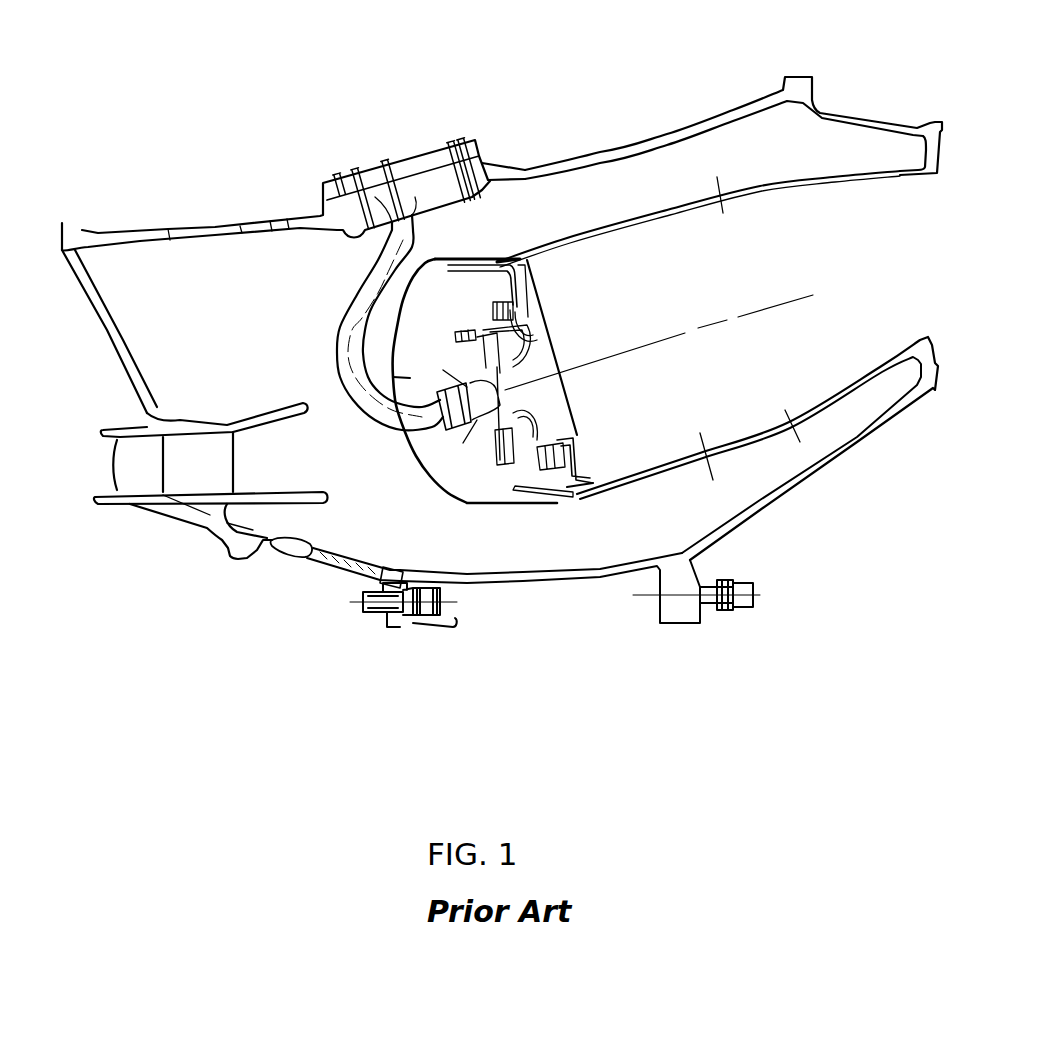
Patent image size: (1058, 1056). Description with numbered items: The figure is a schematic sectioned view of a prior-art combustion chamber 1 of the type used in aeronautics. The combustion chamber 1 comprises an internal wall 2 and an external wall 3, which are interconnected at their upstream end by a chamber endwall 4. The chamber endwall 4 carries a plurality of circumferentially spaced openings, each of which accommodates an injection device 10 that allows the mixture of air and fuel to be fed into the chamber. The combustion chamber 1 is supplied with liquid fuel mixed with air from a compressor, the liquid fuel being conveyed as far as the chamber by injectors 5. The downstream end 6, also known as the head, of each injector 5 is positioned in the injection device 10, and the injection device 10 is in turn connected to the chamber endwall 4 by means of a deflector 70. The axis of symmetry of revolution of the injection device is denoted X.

The combustion chamber 1 is at (818, 150).
The internal wall 2 is at (668, 479).
The external wall 3 is at (672, 195).
The chamber endwall 4 is at (497, 284).
The injector 5 is at (356, 417).
The downstream end (injector head) 6 is at (478, 396).
The injection device 10 is at (594, 384).
The deflector 70 is at (588, 468).